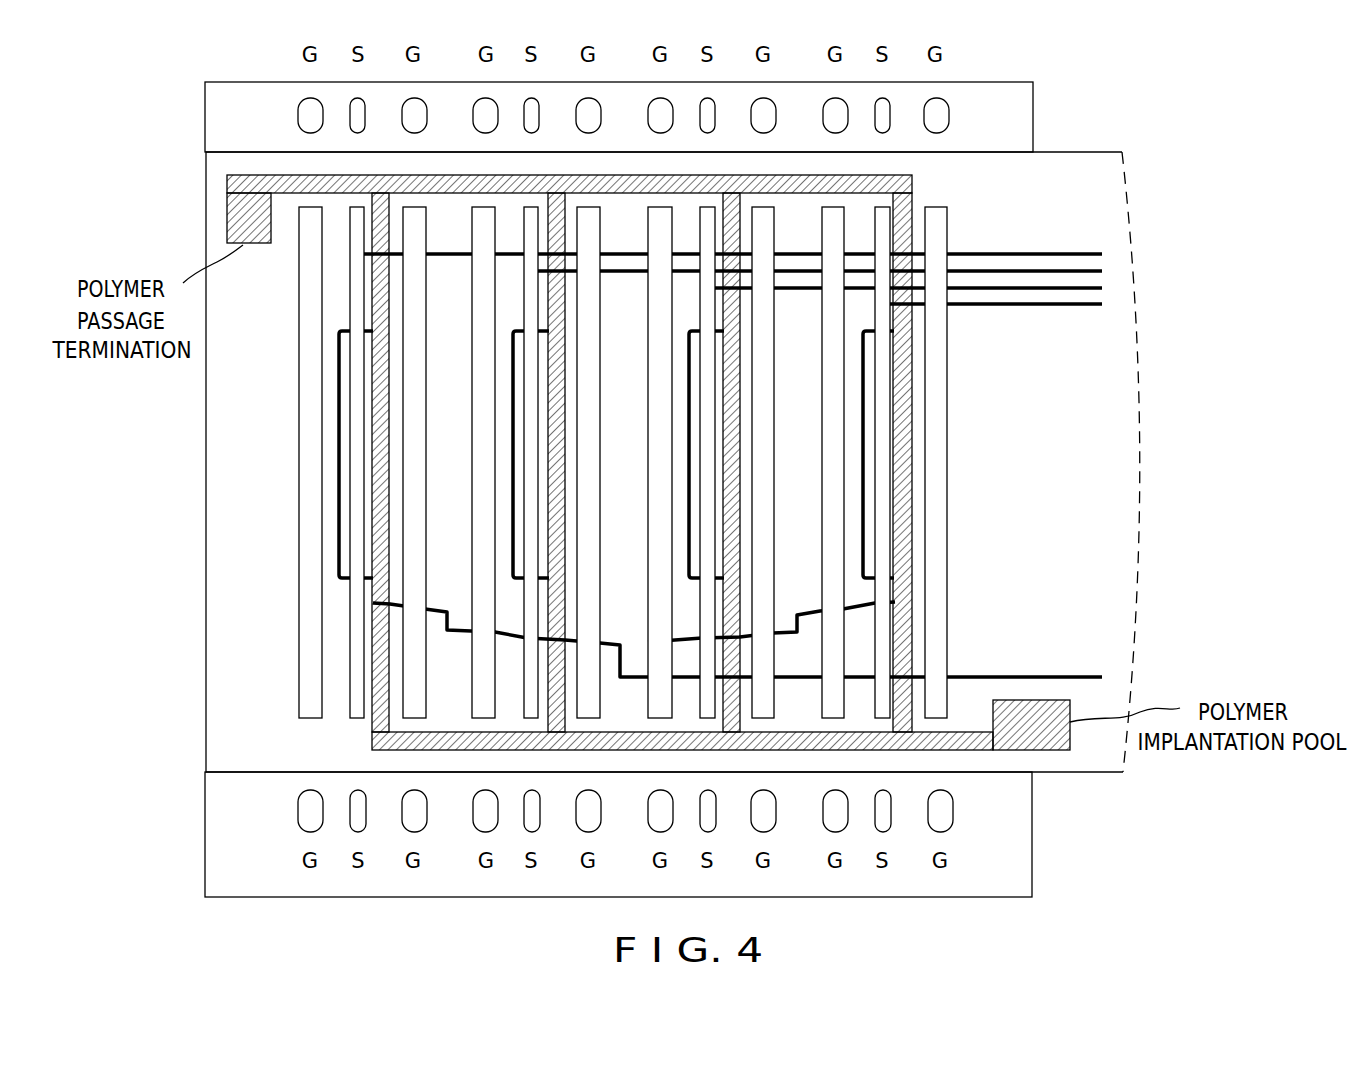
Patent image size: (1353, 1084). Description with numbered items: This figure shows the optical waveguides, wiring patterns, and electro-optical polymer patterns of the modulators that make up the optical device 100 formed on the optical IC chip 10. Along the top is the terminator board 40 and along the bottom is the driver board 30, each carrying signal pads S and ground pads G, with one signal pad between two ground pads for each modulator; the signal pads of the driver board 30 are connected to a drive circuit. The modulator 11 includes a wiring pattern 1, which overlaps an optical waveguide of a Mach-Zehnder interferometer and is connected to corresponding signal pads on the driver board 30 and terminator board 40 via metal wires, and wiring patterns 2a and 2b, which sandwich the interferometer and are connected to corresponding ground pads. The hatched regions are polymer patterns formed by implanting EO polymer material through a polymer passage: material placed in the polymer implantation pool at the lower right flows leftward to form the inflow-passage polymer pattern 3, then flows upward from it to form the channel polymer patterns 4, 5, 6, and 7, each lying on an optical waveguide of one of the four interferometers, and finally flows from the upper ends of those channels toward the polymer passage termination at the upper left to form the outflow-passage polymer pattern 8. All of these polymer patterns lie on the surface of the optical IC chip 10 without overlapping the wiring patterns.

The wiring pattern 1 is at (350, 615).
The wiring pattern 2a is at (427, 695).
The wiring pattern 2b is at (299, 528).
The inflow-passage polymer pattern 3 is at (963, 733).
The channel polymer pattern 4 is at (372, 667).
The channel polymer pattern 5 is at (560, 578).
The channel polymer pattern 6 is at (740, 568).
The channel polymer pattern 7 is at (913, 552).
The outflow-passage polymer pattern 8 is at (912, 183).
The optical IC chip 10 is at (206, 458).
The modulator 11 is at (339, 387).
The driver board 30 is at (1032, 835).
The terminator board 40 is at (1033, 112).
The optical device 100 is at (1170, 130).